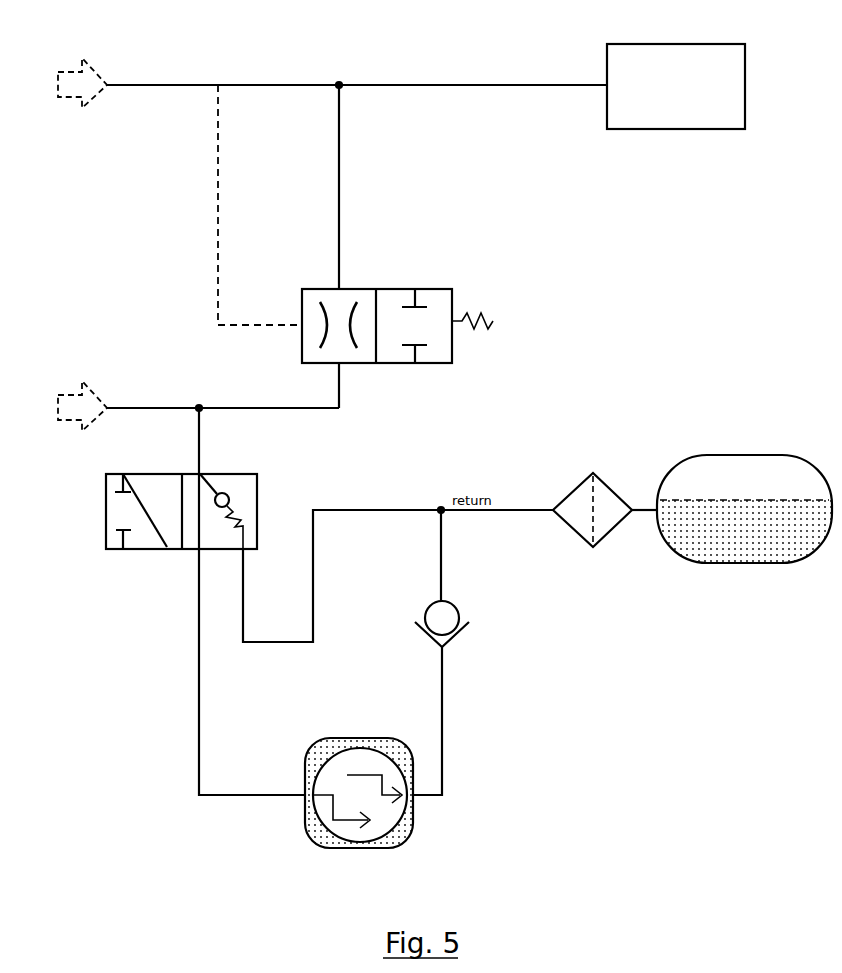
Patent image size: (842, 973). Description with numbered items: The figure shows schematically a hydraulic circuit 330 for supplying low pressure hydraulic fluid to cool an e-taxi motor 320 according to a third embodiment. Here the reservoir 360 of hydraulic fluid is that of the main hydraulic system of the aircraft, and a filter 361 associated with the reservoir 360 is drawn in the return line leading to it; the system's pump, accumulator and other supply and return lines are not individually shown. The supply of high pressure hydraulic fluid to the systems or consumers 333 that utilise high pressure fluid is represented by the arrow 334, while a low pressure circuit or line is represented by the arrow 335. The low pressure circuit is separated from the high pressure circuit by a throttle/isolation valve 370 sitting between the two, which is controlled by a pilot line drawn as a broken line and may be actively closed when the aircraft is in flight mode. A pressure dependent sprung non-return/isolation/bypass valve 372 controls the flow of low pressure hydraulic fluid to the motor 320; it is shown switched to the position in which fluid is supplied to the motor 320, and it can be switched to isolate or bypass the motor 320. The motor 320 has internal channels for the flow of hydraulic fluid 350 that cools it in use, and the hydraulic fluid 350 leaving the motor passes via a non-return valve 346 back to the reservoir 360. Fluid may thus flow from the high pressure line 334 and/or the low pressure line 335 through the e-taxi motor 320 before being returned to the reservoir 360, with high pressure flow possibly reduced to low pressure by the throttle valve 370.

The e-taxi motor 320 is at (302, 770).
The hydraulic circuit 330 is at (658, 289).
The consumers 333 is at (676, 86).
The high pressure supply arrow 334 is at (70, 74).
The low pressure circuit arrow 335 is at (70, 397).
The non-return valve 346 is at (457, 617).
The hydraulic fluid 350 is at (347, 837).
The reservoir 360 is at (733, 550).
The filter 361 is at (605, 492).
The throttle/isolation valve 370 is at (428, 357).
The sprung non-return/isolation/bypass valve 372 is at (122, 517).